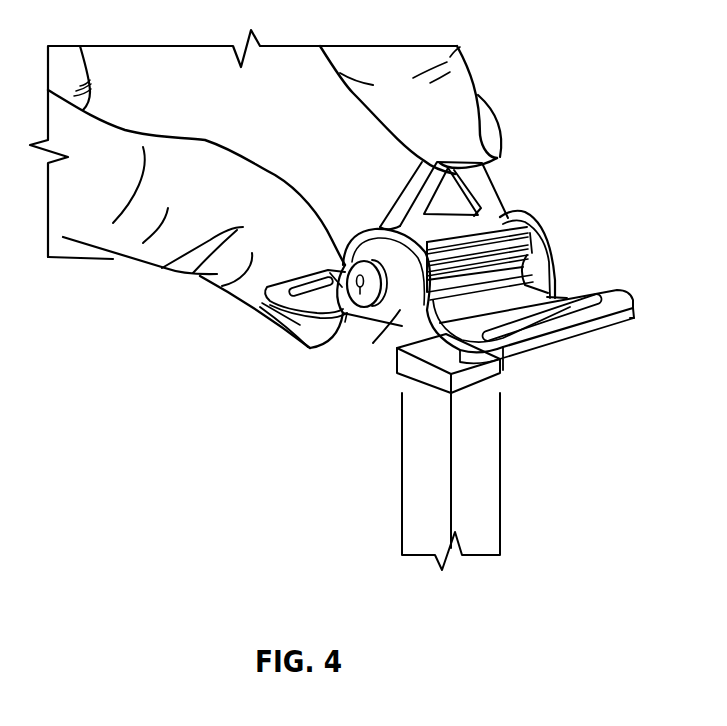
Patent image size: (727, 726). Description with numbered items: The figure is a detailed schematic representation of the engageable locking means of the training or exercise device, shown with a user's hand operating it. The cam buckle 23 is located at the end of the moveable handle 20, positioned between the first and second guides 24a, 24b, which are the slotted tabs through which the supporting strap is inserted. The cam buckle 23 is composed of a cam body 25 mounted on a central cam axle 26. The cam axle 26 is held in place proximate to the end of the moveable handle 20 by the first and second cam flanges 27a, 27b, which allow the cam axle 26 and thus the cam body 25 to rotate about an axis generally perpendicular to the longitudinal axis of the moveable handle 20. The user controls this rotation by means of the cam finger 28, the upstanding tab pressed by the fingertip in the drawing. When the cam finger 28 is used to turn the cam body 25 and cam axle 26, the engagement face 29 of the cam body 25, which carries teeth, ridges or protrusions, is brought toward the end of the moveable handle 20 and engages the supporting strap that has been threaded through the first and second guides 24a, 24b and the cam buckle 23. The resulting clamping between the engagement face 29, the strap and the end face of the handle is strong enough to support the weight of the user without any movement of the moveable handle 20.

The moveable handle 20 is at (482, 477).
The cam buckle 23 is at (543, 238).
The first guide 24a is at (607, 320).
The second guide 24b is at (260, 308).
The cam body 25 is at (503, 215).
The cam axle 26 is at (315, 349).
The first cam flange 27a is at (393, 310).
The second cam flange 27b is at (553, 270).
The cam finger 28 is at (408, 179).
The engagement face 29 is at (392, 212).